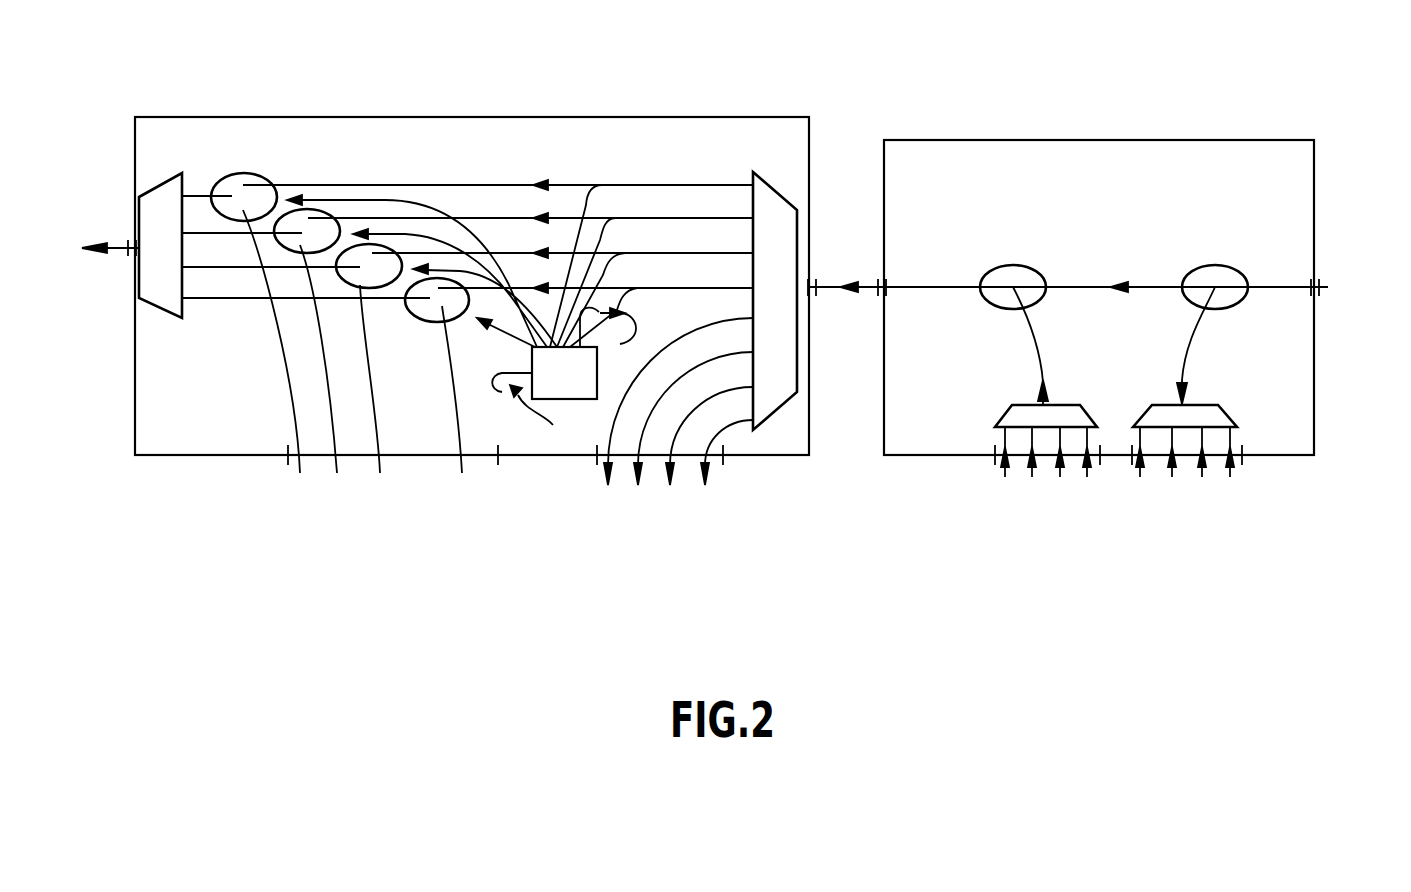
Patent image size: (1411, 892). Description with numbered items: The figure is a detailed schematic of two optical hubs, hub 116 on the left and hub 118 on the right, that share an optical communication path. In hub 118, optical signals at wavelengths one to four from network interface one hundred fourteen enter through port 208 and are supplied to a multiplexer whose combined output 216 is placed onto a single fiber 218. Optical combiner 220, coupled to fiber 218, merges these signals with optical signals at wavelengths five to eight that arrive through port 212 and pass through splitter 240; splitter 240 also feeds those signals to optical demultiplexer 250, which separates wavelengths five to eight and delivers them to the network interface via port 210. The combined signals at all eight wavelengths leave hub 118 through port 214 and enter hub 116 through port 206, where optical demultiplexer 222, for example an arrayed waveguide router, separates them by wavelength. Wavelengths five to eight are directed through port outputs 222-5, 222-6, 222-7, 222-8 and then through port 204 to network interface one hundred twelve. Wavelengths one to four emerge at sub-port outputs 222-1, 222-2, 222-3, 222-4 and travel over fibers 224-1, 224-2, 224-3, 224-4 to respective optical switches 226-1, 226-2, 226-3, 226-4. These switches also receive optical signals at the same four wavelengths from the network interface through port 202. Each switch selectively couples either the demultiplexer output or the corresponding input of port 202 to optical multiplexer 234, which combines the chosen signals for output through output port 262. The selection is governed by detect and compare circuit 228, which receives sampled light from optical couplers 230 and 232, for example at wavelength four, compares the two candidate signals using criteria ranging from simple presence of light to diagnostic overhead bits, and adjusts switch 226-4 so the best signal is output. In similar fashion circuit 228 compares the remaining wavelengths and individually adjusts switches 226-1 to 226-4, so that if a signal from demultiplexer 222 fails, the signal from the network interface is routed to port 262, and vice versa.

The hub 116 is at (532, 117).
The hub 118 is at (1063, 140).
The port 202 is at (288, 462).
The port 204 is at (723, 463).
The port 206 is at (810, 287).
The port 208 is at (993, 462).
The port 210 is at (1243, 460).
The port 212 is at (1316, 279).
The port 214 is at (886, 296).
The output 216 is at (1047, 404).
The fiber 218 is at (1028, 342).
The optical combiner 220 is at (1013, 265).
The optical demultiplexer 222 is at (770, 186).
The sub-port output 222-1 is at (643, 173).
The sub-port output 222-2 is at (643, 206).
The sub-port output 222-3 is at (643, 241).
The sub-port output 222-4 is at (643, 275).
The port output 222-5 is at (678, 389).
The port output 222-6 is at (693, 408).
The port output 222-7 is at (709, 425).
The port output 222-8 is at (718, 442).
The fiber 224-1 is at (440, 184).
The fiber 224-2 is at (446, 217).
The fiber 224-3 is at (463, 252).
The fiber 224-4 is at (484, 287).
The optical switch 226-1 is at (243, 174).
The optical switch 226-2 is at (275, 238).
The optical switch 226-3 is at (370, 280).
The optical switch 226-4 is at (448, 308).
The detect and compare circuit 228 is at (575, 375).
The optical coupler 230 is at (613, 338).
The optical coupler 232 is at (539, 409).
The optical multiplexer 234 is at (160, 307).
The splitter 240 is at (1213, 265).
The optical demultiplexer 250 is at (1217, 407).
The output port 262 is at (131, 240).